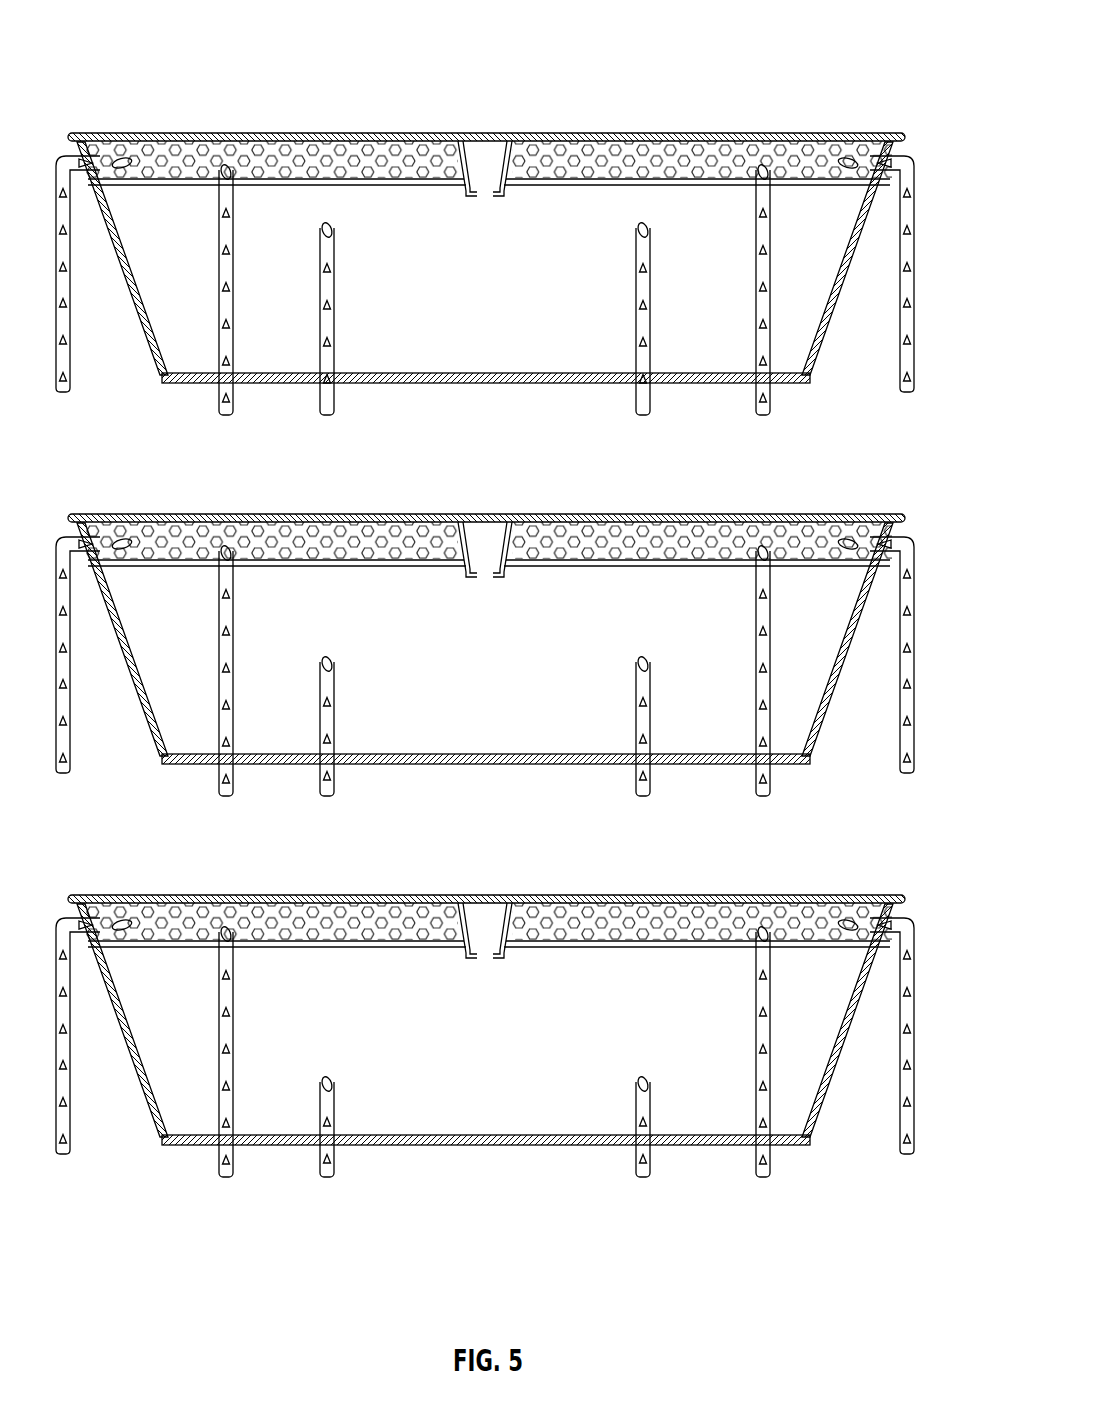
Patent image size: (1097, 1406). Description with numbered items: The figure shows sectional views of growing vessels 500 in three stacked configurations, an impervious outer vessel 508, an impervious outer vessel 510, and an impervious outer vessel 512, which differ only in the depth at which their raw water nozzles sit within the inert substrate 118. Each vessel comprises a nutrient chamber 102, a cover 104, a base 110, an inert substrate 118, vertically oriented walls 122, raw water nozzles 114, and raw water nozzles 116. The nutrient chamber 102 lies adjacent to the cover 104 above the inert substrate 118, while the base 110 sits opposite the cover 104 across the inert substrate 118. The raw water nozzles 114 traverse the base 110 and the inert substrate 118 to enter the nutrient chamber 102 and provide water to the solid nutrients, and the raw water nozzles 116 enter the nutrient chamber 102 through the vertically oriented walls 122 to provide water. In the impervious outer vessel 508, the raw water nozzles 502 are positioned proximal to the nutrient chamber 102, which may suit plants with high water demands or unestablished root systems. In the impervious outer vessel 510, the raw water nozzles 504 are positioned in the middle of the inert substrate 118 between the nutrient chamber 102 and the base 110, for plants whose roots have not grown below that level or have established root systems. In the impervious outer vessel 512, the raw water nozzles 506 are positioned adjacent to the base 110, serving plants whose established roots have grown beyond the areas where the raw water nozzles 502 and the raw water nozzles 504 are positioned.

The growing vessels 500 is at (891, 62).
The cover 104 is at (270, 133).
The nutrient chamber 102 is at (350, 207).
The base 110 is at (441, 372).
The raw water nozzles 114 is at (226, 416).
The raw water nozzles 116 is at (62, 393).
The inert substrate 118 is at (506, 304).
The vertically oriented walls 122 is at (134, 316).
The raw water nozzles 502 is at (327, 416).
The raw water nozzles 504 is at (327, 797).
The raw water nozzles 506 is at (327, 1178).
The impervious outer vessel 508 is at (518, 402).
The impervious outer vessel 510 is at (523, 783).
The impervious outer vessel 512 is at (523, 1168).